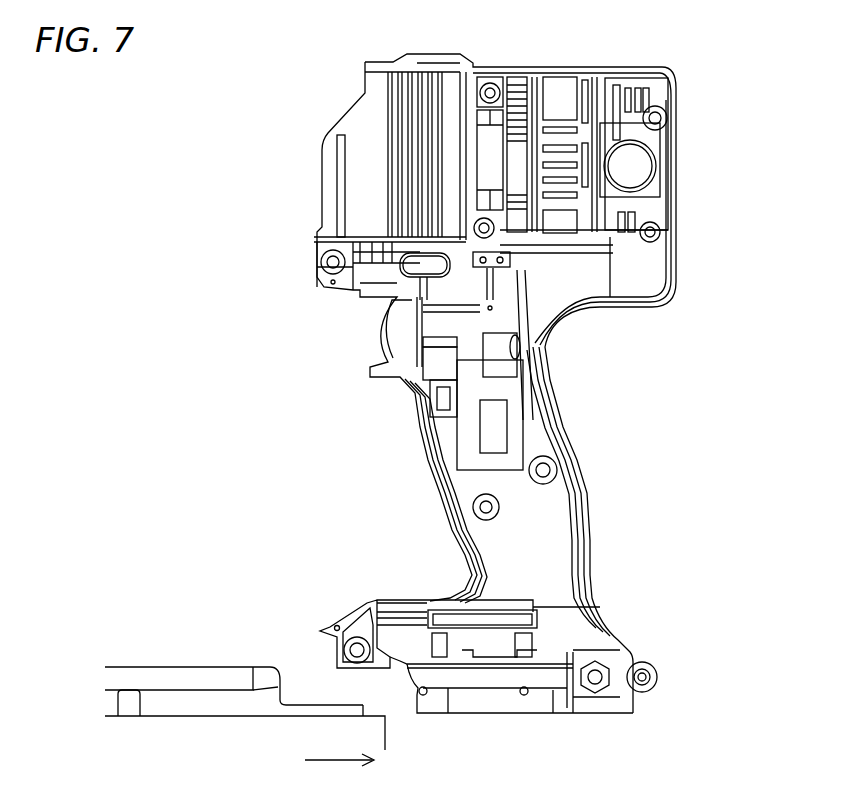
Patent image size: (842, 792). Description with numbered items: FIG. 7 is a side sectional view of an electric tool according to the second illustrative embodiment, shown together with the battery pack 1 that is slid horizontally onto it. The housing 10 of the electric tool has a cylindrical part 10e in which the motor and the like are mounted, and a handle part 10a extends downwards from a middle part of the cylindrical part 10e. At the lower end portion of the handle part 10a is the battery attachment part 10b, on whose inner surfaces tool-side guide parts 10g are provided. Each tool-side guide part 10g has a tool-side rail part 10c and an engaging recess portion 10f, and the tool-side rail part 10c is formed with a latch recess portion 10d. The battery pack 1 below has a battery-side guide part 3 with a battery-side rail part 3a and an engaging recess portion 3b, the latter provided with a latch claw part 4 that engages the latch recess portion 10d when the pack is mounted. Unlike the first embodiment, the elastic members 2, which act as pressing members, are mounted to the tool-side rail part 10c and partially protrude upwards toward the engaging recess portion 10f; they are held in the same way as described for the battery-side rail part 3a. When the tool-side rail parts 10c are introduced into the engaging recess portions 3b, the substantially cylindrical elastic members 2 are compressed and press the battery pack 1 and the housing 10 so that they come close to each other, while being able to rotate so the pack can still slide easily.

The battery pack 1 is at (117, 660).
The elastic member 2 is at (526, 688).
The battery-side guide part 3 is at (245, 650).
The battery-side rail part 3a is at (160, 672).
The engaging recess portion 3b is at (203, 698).
The latch claw part 4 is at (129, 704).
The housing 10 is at (506, 400).
The handle part 10a is at (572, 440).
The battery attachment part 10b is at (357, 603).
The tool-side rail part 10c is at (488, 703).
The latch recess portion 10d is at (440, 707).
The cylindrical part 10e is at (573, 67).
The engaging recess portion 10f is at (553, 680).
The tool-side guide part 10g is at (606, 710).